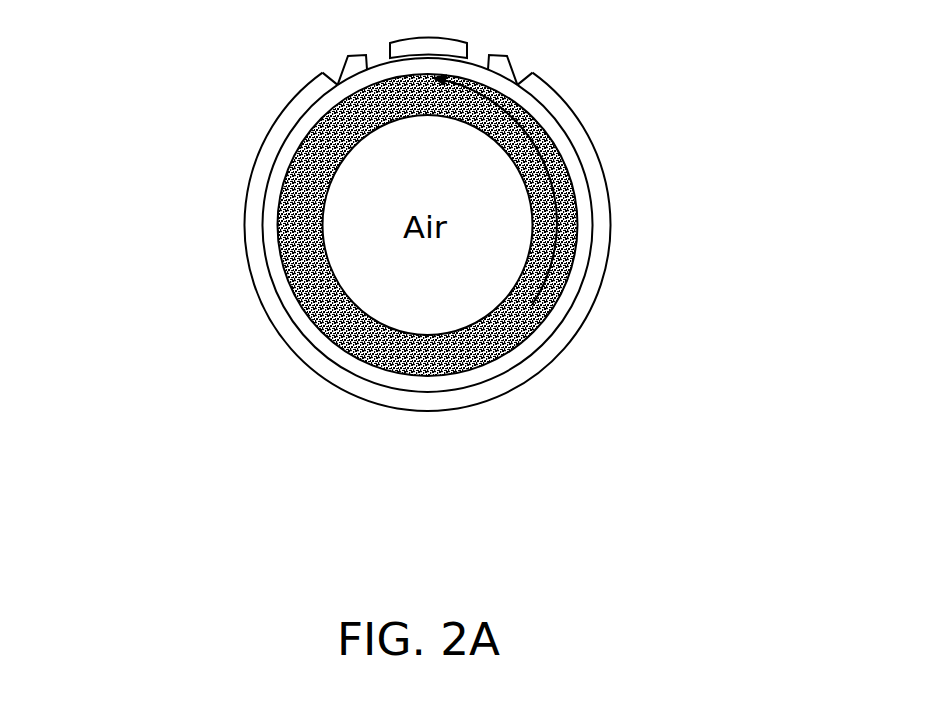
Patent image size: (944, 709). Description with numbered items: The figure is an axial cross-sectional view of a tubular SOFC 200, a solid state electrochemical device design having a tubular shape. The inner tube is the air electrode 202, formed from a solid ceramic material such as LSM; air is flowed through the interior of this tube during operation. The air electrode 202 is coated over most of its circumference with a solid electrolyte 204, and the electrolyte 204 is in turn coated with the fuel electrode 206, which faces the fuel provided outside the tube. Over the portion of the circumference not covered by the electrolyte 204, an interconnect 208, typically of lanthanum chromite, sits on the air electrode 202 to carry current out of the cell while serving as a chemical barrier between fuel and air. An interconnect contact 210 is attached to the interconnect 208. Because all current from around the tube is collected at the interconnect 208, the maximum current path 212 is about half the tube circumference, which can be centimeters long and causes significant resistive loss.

The tubular SOFC 200 is at (658, 158).
The air electrode 202 is at (335, 345).
The electrolyte 204 is at (318, 76).
The fuel electrode 206 is at (255, 292).
The interconnect 208 is at (480, 64).
The interconnect contact 210 is at (390, 42).
The maximum current path 212 is at (532, 305).